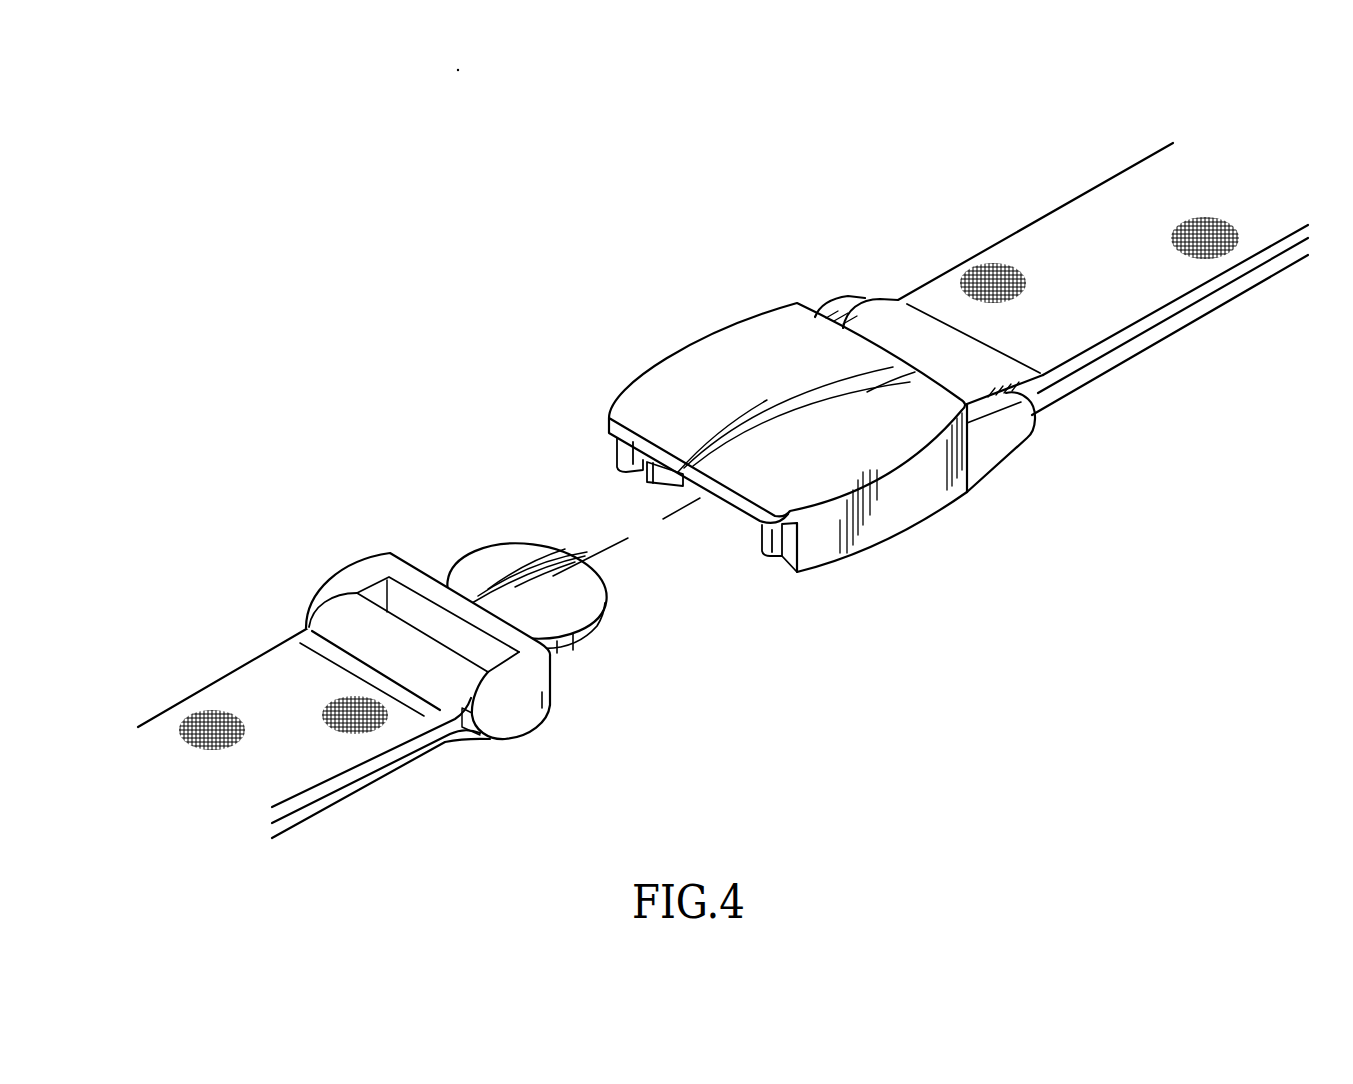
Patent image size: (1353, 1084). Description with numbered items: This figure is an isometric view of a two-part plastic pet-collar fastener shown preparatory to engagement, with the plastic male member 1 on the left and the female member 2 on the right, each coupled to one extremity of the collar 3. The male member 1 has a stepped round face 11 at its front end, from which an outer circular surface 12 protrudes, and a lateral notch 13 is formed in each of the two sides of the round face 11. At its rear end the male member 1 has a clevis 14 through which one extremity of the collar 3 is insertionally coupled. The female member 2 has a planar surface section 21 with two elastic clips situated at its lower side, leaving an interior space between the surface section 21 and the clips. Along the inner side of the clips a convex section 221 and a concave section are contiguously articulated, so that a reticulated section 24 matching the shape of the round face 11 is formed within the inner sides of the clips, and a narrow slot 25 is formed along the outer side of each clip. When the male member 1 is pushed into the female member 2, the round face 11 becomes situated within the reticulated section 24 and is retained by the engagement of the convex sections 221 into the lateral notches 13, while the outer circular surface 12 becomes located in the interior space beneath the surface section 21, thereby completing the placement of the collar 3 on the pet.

The male member 1 is at (486, 618).
The round face 11 is at (582, 638).
The outer circular surface 12 is at (525, 557).
The lateral notch 13 is at (557, 653).
The clevis 14 is at (375, 590).
The female member 2 is at (798, 414).
The surface section 21 is at (897, 448).
The convex section 221 is at (650, 484).
The reticulated section 24 is at (708, 508).
The narrow slot 25 is at (637, 468).
The collar 3 is at (250, 643).